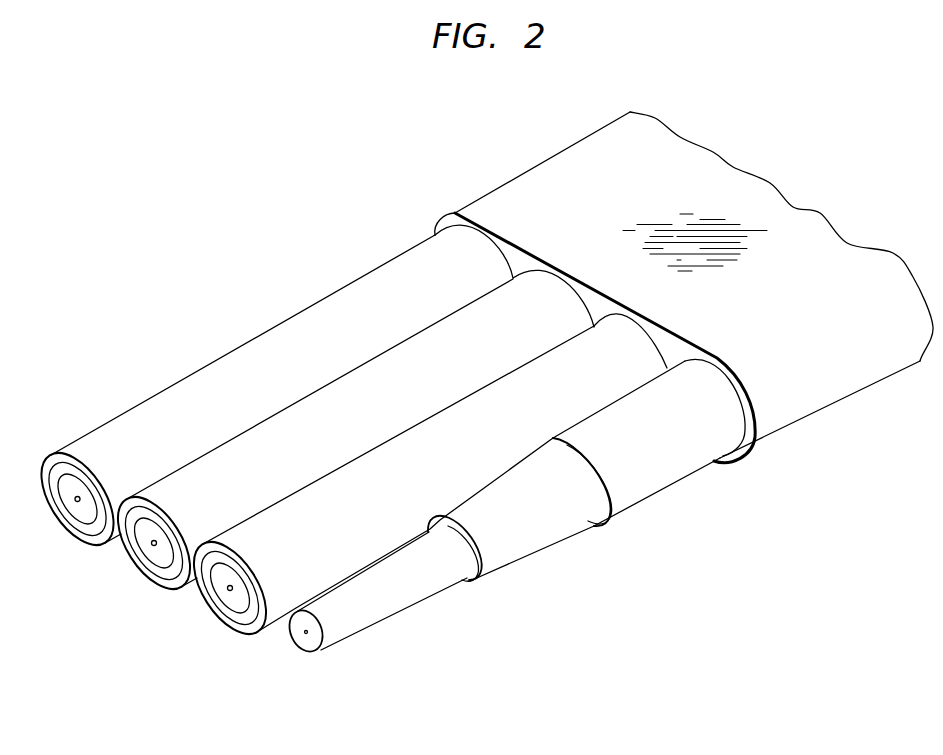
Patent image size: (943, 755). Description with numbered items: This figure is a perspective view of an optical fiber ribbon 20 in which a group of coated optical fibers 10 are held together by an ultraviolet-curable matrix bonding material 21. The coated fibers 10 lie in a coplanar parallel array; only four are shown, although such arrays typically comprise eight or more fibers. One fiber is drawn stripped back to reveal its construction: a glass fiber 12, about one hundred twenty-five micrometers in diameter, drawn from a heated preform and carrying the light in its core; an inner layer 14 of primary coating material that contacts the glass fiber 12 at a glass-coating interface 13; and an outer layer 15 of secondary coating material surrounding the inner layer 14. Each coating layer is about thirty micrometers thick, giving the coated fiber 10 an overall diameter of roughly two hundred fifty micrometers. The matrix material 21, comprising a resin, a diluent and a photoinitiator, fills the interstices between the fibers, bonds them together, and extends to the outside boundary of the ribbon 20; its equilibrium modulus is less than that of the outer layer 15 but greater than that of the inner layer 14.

The coated optical fiber 10 is at (386, 376).
The glass fiber 12 is at (377, 608).
The glass-coating interface 13 is at (470, 582).
The inner layer 14 is at (533, 533).
The outer layer 15 is at (663, 473).
The optical fiber ribbon 20 is at (825, 174).
The matrix bonding material 21 is at (714, 175).